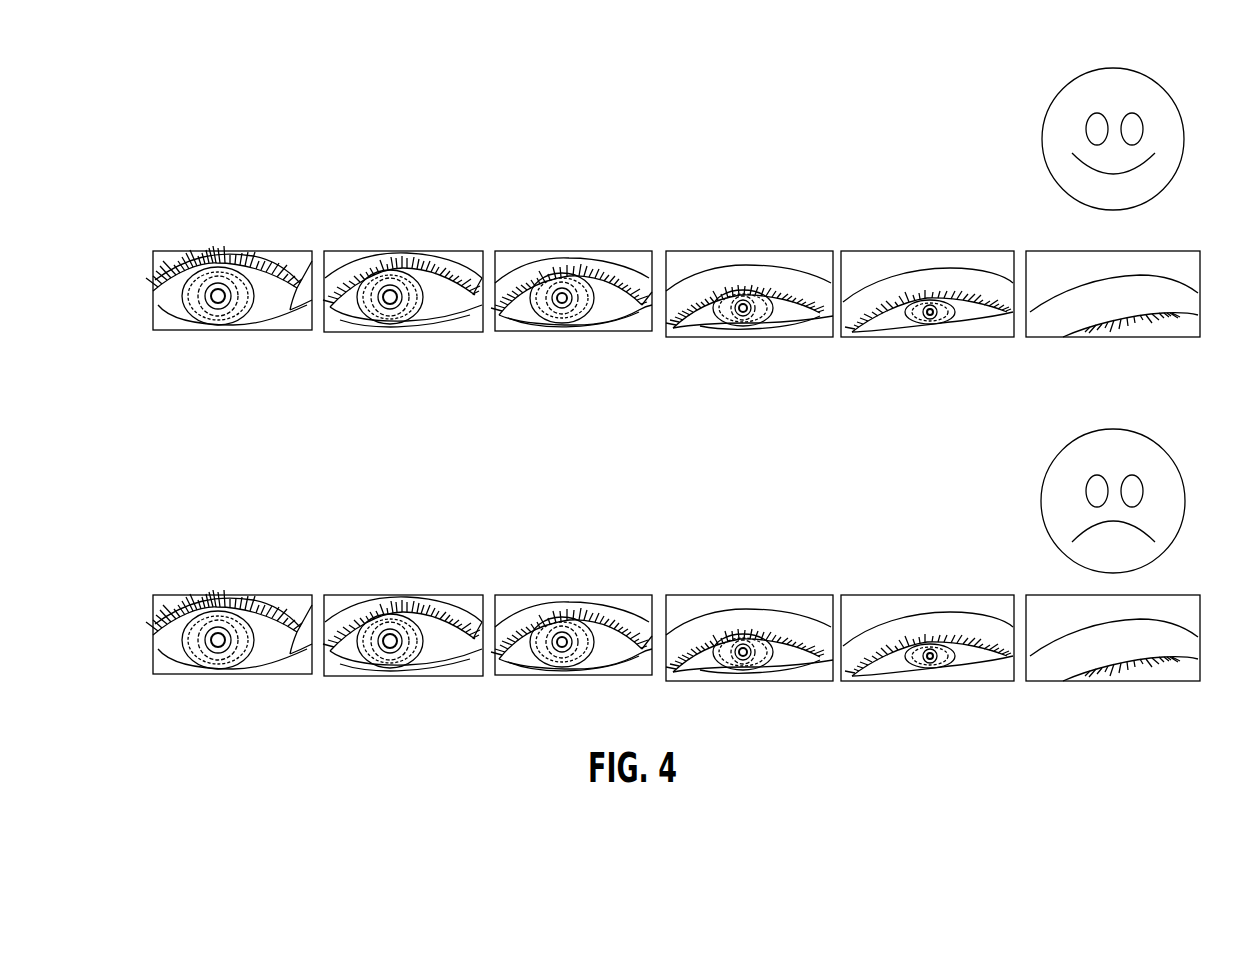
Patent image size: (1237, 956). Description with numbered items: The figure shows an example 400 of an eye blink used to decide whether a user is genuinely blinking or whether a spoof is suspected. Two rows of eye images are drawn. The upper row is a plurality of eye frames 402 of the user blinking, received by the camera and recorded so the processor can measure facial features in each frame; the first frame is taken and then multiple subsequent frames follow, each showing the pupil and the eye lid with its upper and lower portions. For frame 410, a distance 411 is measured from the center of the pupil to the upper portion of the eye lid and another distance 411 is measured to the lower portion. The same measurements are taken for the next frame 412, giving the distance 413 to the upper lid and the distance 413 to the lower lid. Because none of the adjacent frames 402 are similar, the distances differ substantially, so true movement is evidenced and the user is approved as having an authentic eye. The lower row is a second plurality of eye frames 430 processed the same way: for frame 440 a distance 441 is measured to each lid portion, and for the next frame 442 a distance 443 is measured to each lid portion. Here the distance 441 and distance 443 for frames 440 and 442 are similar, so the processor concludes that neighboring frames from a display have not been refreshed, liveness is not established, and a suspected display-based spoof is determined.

The example of an eye blink 400 is at (198, 133).
The plurality of eye frames 402 is at (227, 402).
The plurality of eye frames 430 is at (227, 743).
The frame 410 is at (520, 251).
The distance 411 is at (582, 280).
The next frame 412 is at (693, 251).
The distance 413 is at (757, 297).
The frame 440 is at (520, 595).
The distance 441 is at (582, 624).
The next frame 442 is at (693, 595).
The distance 443 is at (757, 641).